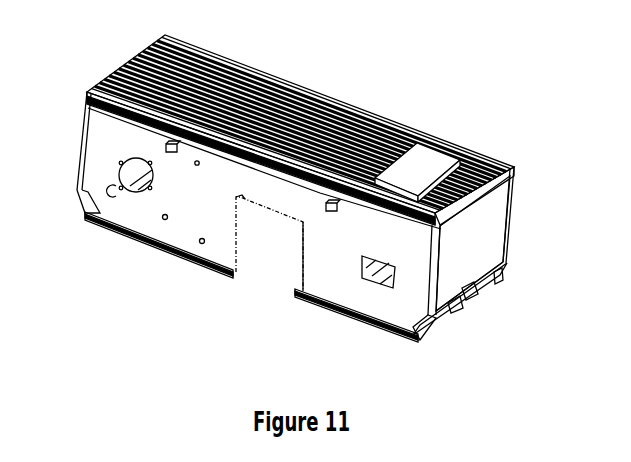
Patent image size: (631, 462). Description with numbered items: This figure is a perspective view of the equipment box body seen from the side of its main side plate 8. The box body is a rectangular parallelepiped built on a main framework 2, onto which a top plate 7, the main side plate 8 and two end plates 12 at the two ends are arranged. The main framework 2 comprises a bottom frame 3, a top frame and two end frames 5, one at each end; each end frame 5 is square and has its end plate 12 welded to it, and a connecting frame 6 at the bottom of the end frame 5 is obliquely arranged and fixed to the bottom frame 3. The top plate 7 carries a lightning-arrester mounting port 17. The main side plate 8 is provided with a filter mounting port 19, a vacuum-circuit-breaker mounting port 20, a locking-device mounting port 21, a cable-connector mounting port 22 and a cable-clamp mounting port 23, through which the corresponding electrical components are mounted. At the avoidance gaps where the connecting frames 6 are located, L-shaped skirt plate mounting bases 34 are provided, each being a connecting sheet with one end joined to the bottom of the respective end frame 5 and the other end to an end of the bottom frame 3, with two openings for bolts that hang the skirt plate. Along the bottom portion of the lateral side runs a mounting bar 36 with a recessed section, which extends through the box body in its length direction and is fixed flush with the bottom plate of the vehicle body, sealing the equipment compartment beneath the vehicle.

The main framework 2 is at (497, 278).
The bottom frame 3 is at (423, 327).
The end frame 5 is at (508, 197).
The connecting frame 6 is at (416, 340).
The top plate 7 is at (97, 88).
The main side plate 8 is at (303, 295).
The end plate 12 is at (492, 242).
The lightning-arrester mounting port 17 is at (422, 153).
The filter mounting port 19 is at (373, 280).
The vacuum-circuit-breaker mounting port 20 is at (258, 248).
The locking-device mounting port 21 is at (201, 243).
The cable-connector mounting port 22 is at (127, 170).
The cable-clamp mounting port 23 is at (196, 165).
The skirt plate mounting base 34 is at (476, 298).
The mounting bar 36 is at (390, 334).